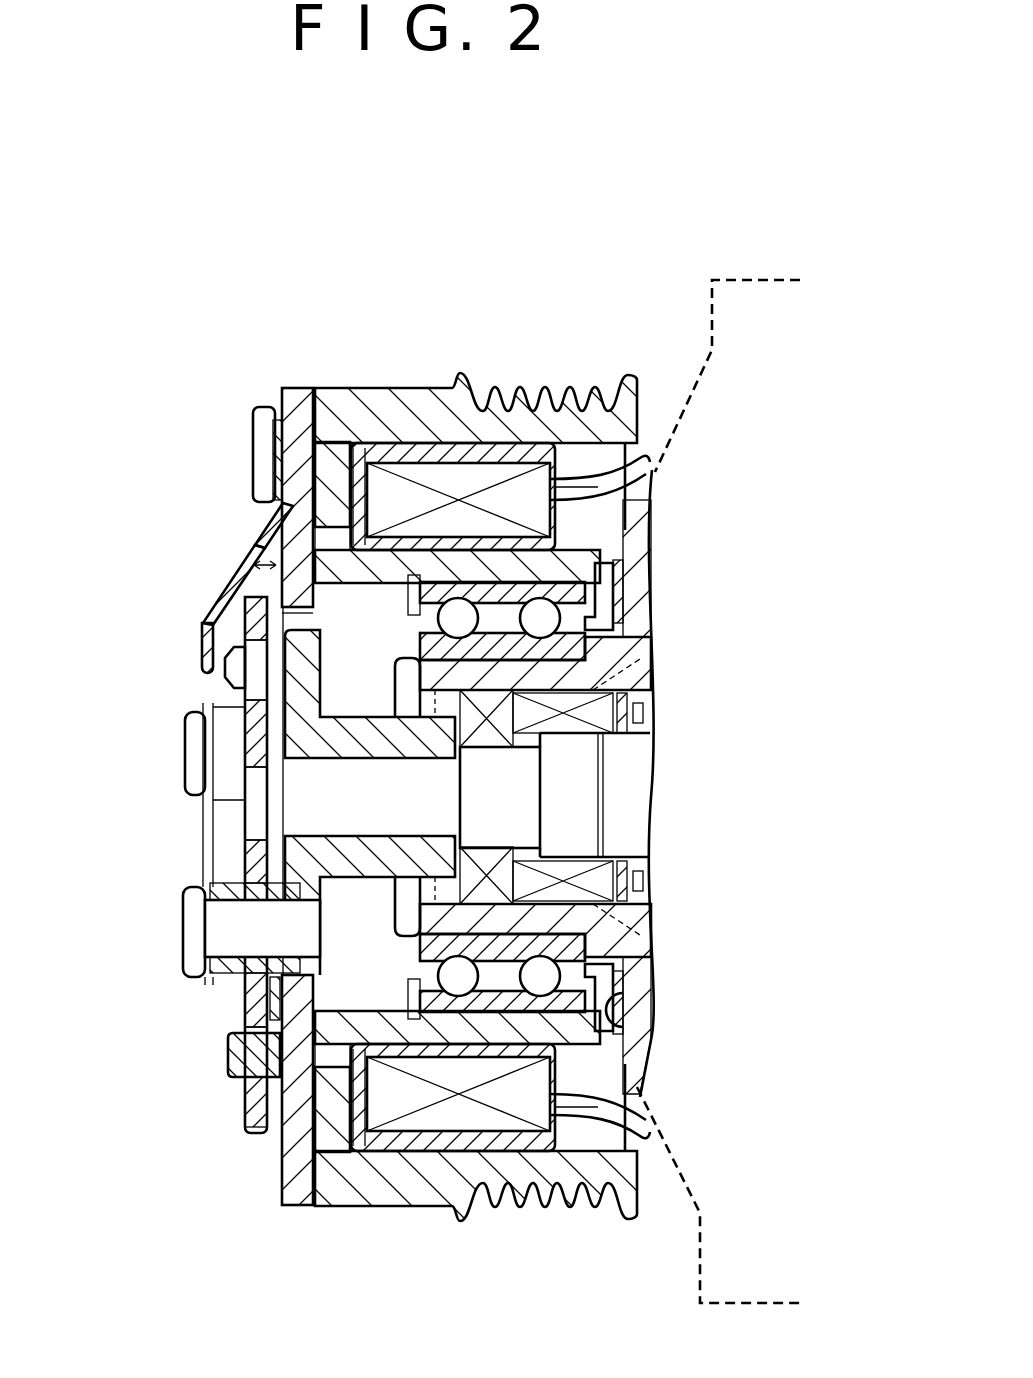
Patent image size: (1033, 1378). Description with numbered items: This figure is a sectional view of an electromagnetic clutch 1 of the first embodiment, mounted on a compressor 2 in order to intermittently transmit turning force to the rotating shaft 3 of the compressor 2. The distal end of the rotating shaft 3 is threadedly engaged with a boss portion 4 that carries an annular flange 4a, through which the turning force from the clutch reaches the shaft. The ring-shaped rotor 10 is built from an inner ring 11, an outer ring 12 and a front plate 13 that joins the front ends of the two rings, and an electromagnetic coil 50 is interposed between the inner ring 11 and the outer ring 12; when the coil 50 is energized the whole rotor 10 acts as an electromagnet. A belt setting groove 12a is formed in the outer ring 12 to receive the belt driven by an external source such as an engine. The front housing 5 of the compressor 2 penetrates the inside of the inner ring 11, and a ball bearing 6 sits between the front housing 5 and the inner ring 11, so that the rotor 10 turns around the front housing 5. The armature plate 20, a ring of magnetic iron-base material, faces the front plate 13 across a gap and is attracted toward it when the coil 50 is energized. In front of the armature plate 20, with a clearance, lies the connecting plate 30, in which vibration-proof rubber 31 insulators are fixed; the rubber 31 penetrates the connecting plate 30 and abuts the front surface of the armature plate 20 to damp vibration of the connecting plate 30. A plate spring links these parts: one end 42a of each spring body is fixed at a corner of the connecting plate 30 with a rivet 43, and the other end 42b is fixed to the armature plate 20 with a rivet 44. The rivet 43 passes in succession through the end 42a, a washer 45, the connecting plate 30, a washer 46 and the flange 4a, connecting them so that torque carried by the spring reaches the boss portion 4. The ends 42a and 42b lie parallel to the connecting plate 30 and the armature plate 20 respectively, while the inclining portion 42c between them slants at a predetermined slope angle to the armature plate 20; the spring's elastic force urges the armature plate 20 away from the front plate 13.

The electromagnetic clutch 1 is at (213, 445).
The compressor 2 is at (763, 280).
The rotating shaft 3 is at (598, 812).
The boss portion 4 is at (350, 714).
The flange 4a is at (320, 963).
The front housing 5 is at (625, 647).
The ball bearing 6 is at (637, 948).
The rotor 10 is at (421, 388).
The inner ring 11 is at (605, 572).
The outer ring 12 is at (355, 392).
The belt setting groove 12a is at (546, 376).
The front plate 13 is at (323, 1112).
The armature plate 20 is at (290, 390).
The connecting plate 30 is at (247, 1010).
The vibration-proof rubber 31 is at (225, 687).
The one end of spring body 42a is at (200, 650).
The other end of spring body 42b is at (250, 418).
The inclining portion 42c is at (246, 536).
The rivet 43 is at (185, 790).
The rivet 44 is at (240, 475).
The washer 45 is at (217, 983).
The washer 46 is at (245, 852).
The electromagnetic coil 50 is at (427, 1122).